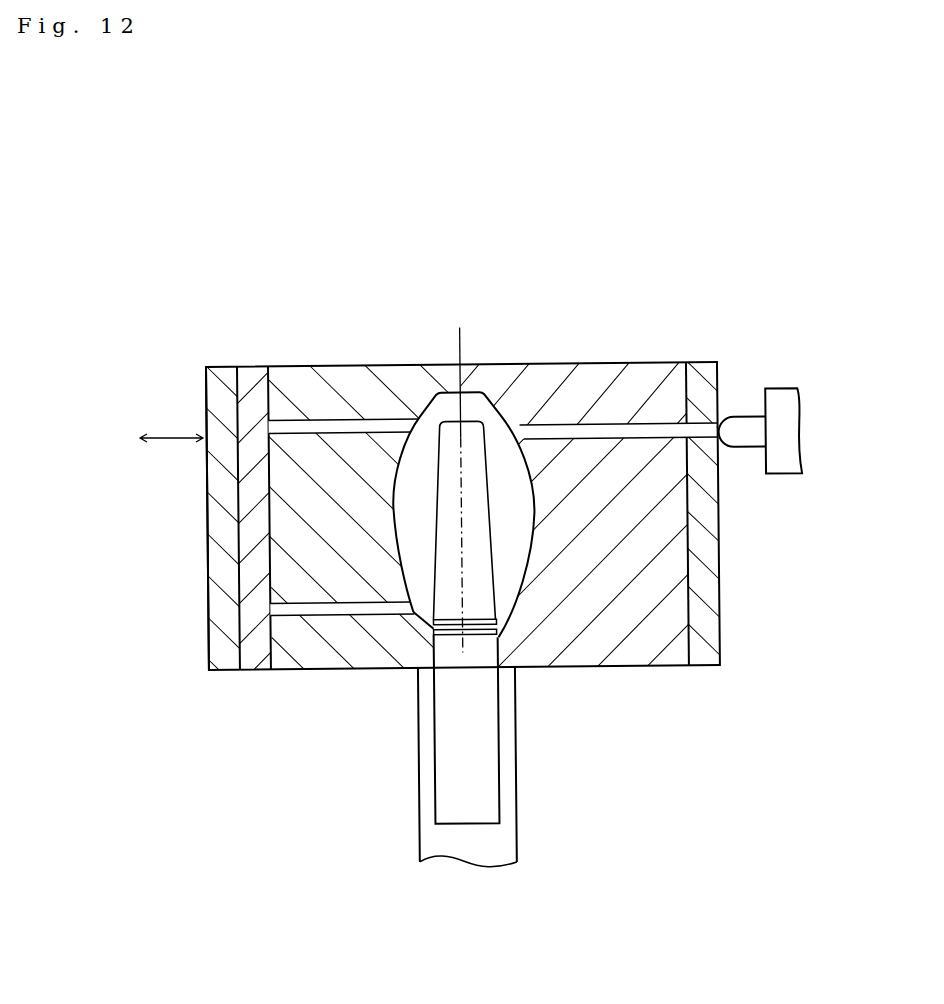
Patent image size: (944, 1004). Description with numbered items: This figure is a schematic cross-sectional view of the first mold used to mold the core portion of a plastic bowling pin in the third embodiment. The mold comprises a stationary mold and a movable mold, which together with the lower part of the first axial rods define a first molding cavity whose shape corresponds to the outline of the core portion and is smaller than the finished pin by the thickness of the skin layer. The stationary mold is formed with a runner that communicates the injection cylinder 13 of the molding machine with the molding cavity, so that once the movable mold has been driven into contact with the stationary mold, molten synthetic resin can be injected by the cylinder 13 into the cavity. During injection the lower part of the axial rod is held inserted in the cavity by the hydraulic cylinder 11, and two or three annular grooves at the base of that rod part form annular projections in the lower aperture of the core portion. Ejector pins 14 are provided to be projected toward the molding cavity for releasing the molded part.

The hydraulic cylinder 11 is at (515, 848).
The injection cylinder 13 is at (790, 474).
The ejector pins 14 is at (296, 418).